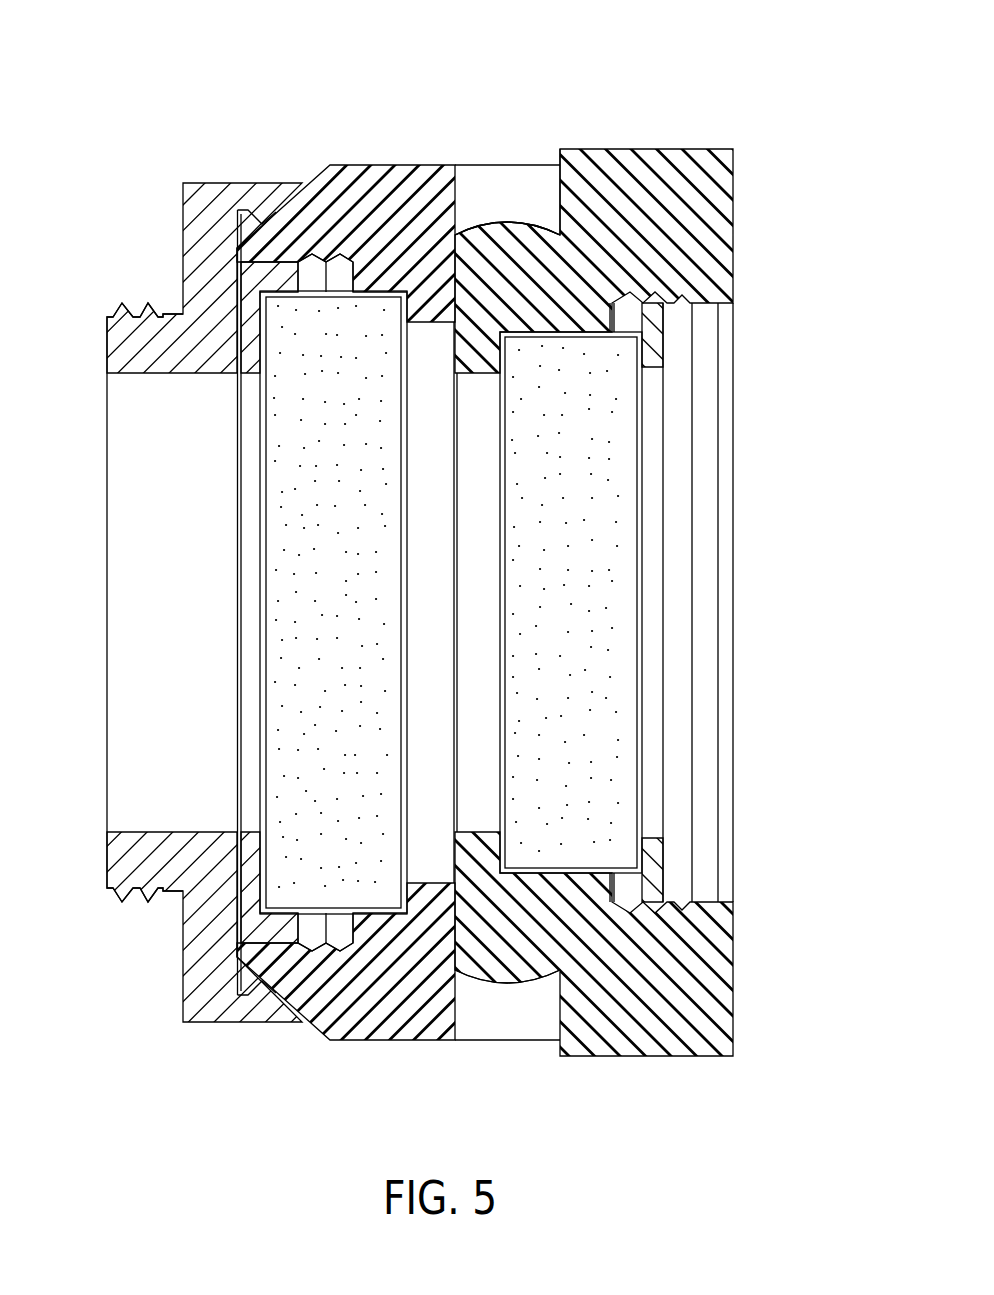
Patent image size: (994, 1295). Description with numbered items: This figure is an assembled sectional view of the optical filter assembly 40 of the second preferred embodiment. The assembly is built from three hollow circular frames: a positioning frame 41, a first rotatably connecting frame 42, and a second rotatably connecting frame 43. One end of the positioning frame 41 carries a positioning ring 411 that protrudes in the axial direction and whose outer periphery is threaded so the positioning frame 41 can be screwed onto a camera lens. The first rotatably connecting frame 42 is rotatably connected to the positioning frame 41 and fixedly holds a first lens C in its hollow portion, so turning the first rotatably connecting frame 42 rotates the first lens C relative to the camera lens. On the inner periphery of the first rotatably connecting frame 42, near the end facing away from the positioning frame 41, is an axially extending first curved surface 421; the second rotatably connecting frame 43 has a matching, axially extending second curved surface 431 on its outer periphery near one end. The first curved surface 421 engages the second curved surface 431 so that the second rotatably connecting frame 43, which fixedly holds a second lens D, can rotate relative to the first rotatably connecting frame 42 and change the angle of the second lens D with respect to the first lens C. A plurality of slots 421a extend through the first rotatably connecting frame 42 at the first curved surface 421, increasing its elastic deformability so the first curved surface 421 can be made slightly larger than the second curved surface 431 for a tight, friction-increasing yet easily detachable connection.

The optical filter assembly 40 is at (765, 72).
The positioning frame 41 is at (203, 210).
The positioning ring 411 is at (150, 343).
The first rotatably connecting frame 42 is at (380, 190).
The first curved surface 421 is at (497, 222).
The slot 421a is at (492, 1010).
The second rotatably connecting frame 43 is at (650, 175).
The second curved surface 431 is at (533, 232).
The first lens C is at (305, 688).
The second lens D is at (600, 500).